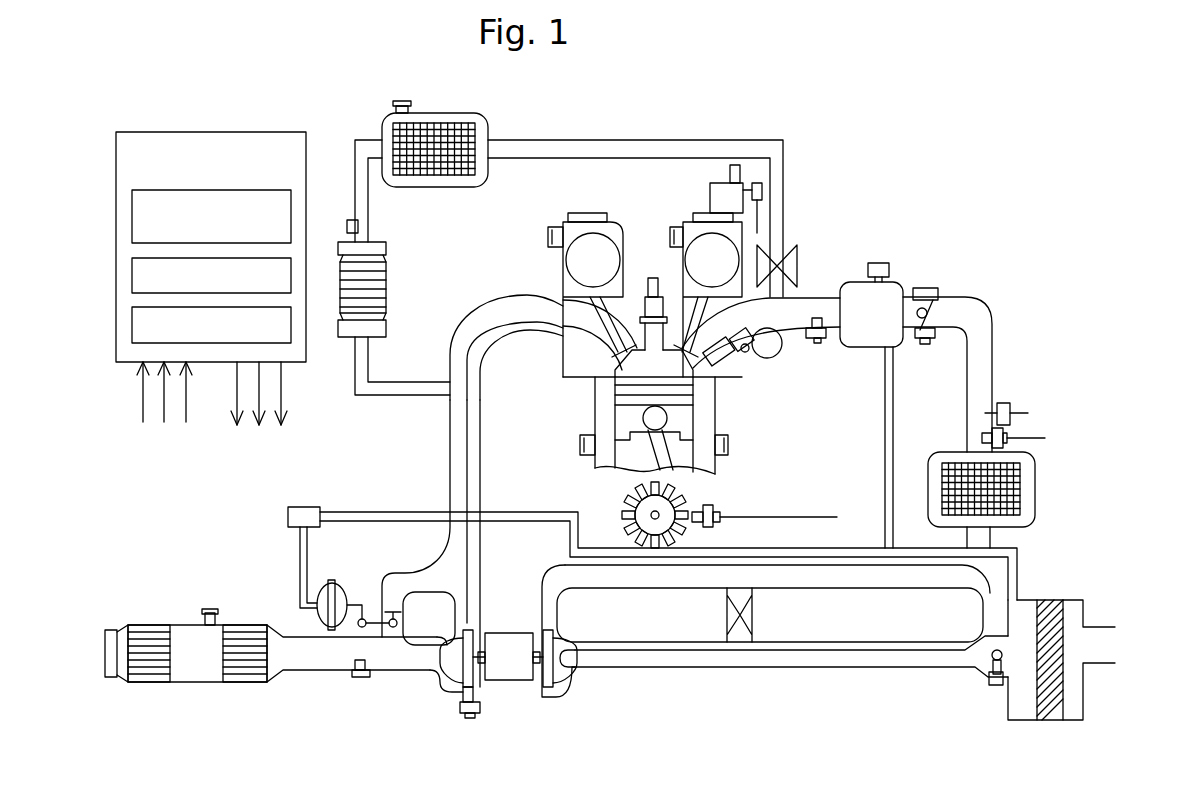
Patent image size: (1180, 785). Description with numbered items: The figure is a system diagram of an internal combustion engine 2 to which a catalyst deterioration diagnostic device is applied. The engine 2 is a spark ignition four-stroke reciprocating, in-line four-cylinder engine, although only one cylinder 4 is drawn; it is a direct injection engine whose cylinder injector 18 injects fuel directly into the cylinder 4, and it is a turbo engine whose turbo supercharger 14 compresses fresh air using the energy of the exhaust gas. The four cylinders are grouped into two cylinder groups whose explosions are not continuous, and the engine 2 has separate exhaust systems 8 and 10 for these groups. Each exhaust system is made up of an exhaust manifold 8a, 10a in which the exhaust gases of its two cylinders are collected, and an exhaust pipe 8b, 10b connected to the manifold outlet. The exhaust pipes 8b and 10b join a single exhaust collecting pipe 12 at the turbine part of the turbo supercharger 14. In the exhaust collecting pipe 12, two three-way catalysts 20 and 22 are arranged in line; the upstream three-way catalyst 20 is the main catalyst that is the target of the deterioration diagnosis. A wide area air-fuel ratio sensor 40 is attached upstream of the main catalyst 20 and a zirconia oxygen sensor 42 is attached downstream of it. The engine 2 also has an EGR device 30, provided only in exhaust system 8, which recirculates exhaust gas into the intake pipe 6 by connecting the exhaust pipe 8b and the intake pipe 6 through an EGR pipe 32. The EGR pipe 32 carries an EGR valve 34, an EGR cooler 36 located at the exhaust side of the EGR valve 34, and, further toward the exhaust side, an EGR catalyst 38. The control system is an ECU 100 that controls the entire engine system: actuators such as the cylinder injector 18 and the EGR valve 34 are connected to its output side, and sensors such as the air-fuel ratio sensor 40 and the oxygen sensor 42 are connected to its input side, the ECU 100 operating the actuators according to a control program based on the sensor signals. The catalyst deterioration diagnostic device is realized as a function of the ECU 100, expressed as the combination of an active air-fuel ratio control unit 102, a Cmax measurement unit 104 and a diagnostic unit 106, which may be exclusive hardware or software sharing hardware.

The internal combustion engine 2 is at (850, 150).
The cylinder 4 is at (722, 425).
The intake pipe 6 is at (996, 349).
The exhaust system 8 is at (433, 417).
The exhaust manifold 8a is at (508, 297).
The exhaust pipe 8b is at (450, 447).
The exhaust system 10 is at (497, 468).
The exhaust manifold 10a is at (528, 338).
The exhaust pipe 10b is at (482, 430).
The exhaust collecting pipe 12 is at (315, 672).
The turbo supercharger 14 is at (518, 700).
The cylinder injector 18 is at (760, 358).
The three-way catalyst 20 is at (240, 683).
The three-way catalyst 22 is at (153, 683).
The EGR device 30 is at (540, 125).
The EGR pipe 32 is at (665, 140).
The EGR valve 34 is at (797, 264).
The EGR cooler 36 is at (443, 113).
The EGR catalyst 38 is at (386, 282).
The wide area air-fuel ratio sensor 40 is at (357, 680).
The zirconia oxygen sensor 42 is at (210, 609).
The ECU 100 is at (173, 251).
The active air-fuel ratio control unit 102 is at (132, 222).
The Cmax measurement unit 104 is at (132, 274).
The diagnostic unit 106 is at (132, 328).